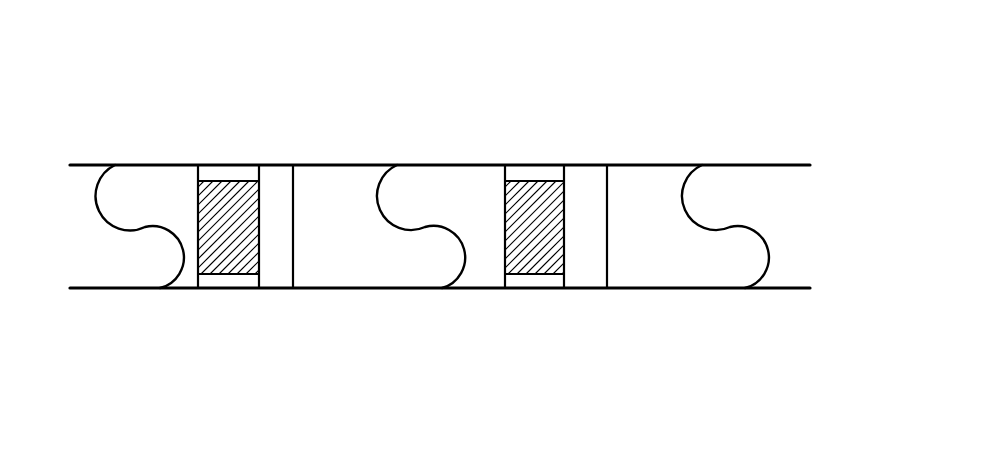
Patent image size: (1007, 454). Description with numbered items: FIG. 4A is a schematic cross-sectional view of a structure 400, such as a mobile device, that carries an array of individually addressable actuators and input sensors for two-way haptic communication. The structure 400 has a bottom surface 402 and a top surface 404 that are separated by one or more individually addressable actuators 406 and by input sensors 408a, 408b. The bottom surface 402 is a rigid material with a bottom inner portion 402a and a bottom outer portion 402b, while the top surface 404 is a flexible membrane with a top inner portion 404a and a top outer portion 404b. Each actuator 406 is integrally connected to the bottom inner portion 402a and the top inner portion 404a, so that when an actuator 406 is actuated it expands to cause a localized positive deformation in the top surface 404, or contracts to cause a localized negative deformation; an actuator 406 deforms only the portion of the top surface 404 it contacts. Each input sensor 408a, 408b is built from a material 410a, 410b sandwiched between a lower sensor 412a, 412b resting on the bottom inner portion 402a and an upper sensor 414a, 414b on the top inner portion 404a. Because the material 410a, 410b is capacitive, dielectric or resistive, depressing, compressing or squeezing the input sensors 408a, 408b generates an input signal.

The structure 400 is at (450, 227).
The bottom surface 402 is at (449, 309).
The bottom inner portion 402a is at (449, 288).
The bottom outer portion 402b is at (440, 309).
The top surface 404 is at (450, 164).
The top inner portion 404a is at (450, 173).
The top outer portion 404b is at (440, 144).
The individually addressable actuators 406 is at (422, 226).
The input sensor 408a is at (207, 185).
The input sensor 408b is at (522, 192).
The material 410a is at (229, 227).
The material 410b is at (536, 227).
The lower sensor 412a is at (217, 310).
The lower sensor 412b is at (522, 310).
The upper sensor 414a is at (219, 141).
The upper sensor 414b is at (528, 141).